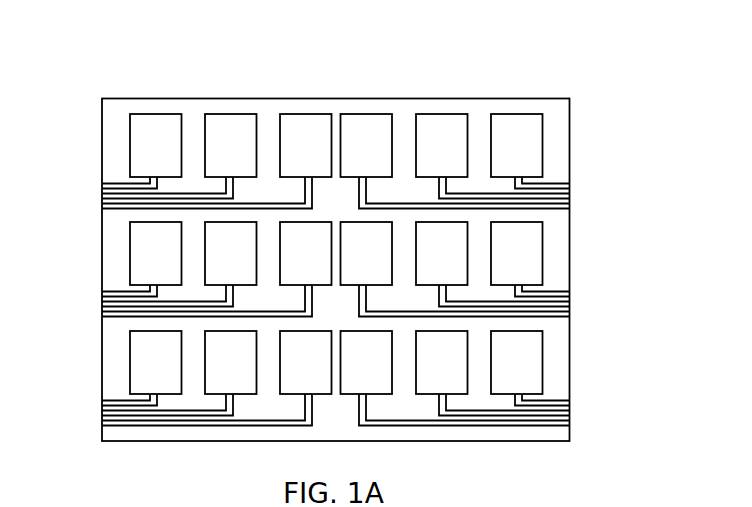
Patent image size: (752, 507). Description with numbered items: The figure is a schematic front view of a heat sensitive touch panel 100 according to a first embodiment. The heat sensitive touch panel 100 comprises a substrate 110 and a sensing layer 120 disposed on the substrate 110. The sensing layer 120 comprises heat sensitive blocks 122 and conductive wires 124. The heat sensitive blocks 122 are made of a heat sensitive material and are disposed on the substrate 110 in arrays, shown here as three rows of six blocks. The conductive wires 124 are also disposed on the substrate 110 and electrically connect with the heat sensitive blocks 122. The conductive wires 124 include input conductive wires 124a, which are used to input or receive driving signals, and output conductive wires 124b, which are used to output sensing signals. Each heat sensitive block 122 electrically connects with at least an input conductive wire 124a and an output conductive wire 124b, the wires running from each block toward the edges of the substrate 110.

The heat sensitive touch panel 100 is at (390, 37).
The substrate 110 is at (102, 115).
The sensing layer 120 is at (118, 254).
The heat sensitive block 122 is at (525, 151).
The conductive wire 124 is at (570, 276).
The input conductive wire 124a is at (548, 398).
The output conductive wire 124b is at (563, 408).